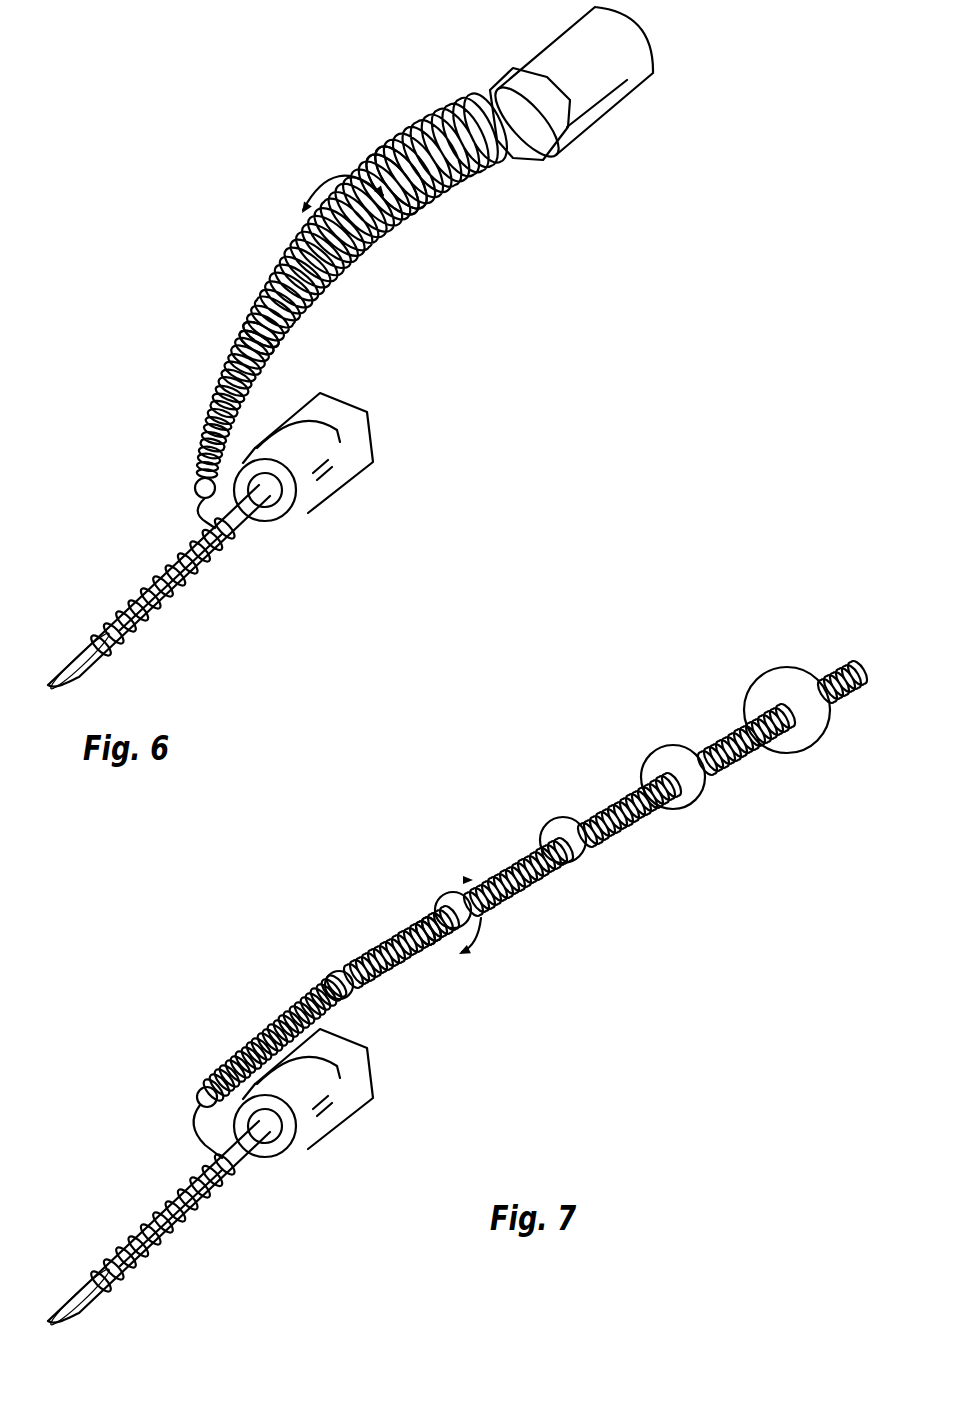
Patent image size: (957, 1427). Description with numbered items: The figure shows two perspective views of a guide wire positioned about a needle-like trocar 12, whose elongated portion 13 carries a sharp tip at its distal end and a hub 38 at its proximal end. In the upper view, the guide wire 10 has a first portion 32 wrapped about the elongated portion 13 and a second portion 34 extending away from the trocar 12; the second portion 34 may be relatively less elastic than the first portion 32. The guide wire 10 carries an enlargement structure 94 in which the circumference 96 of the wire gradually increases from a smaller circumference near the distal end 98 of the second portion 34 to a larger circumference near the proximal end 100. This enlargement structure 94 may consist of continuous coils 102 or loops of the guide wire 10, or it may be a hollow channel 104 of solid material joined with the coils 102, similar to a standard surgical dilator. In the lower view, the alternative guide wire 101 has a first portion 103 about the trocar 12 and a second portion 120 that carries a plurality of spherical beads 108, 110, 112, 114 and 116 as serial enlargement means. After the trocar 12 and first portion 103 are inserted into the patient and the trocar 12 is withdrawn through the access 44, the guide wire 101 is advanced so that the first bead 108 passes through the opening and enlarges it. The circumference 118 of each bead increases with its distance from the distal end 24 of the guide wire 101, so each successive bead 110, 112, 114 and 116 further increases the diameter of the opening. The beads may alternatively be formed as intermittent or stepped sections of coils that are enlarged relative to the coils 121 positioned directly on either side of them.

In FIG. 6, the guide wire 10 is at (224, 331).
In FIG. 6, the trocar 12 is at (252, 527).
In FIG. 7, the trocar 12 is at (336, 1146).
In FIG. 6, the elongated portion 13 is at (183, 582).
In FIG. 7, the elongated portion 13 is at (162, 1240).
In FIG. 7, the distal end 24 is at (137, 1224).
In FIG. 6, the first portion 32 is at (120, 583).
In FIG. 6, the second portion 34 is at (280, 345).
In FIG. 6, the hub 38 is at (358, 457).
In FIG. 7, the hub 38 is at (346, 1100).
In FIG. 7, the access 44 is at (283, 1186).
In FIG. 6, the enlargement structure 94 is at (427, 233).
In FIG. 6, the circumference 96 is at (340, 172).
In FIG. 6, the distal end 98 is at (196, 462).
In FIG. 6, the proximal end 100 is at (423, 110).
In FIG. 7, the guide wire 101 is at (277, 1016).
In FIG. 6, the coils 102 is at (493, 182).
In FIG. 7, the first portion 103 is at (135, 1193).
In FIG. 6, the hollow channel 104 is at (593, 90).
In FIG. 7, the bead 108 is at (340, 972).
In FIG. 7, the bead 110 is at (453, 900).
In FIG. 7, the bead 112 is at (563, 828).
In FIG. 7, the bead 114 is at (672, 755).
In FIG. 7, the bead 116 is at (790, 690).
In FIG. 7, the circumference 118 is at (490, 917).
In FIG. 7, the second portion 120 is at (436, 950).
In FIG. 7, the coils 121 is at (470, 880).